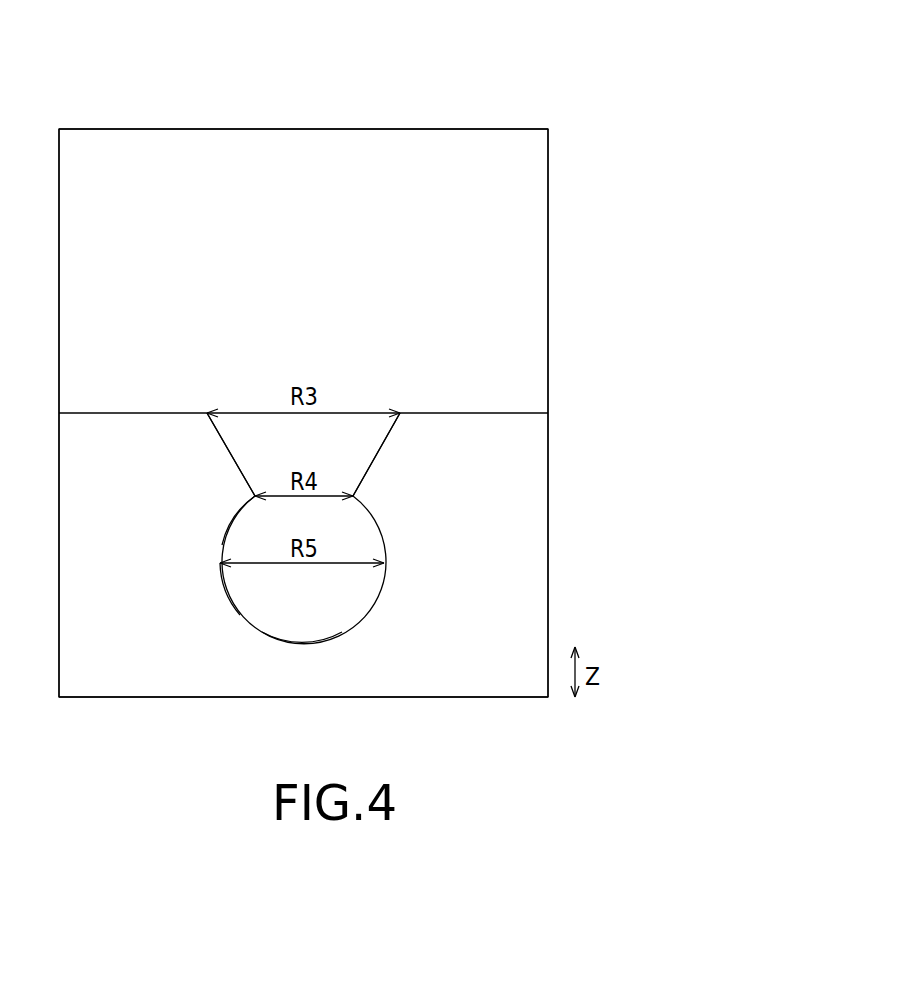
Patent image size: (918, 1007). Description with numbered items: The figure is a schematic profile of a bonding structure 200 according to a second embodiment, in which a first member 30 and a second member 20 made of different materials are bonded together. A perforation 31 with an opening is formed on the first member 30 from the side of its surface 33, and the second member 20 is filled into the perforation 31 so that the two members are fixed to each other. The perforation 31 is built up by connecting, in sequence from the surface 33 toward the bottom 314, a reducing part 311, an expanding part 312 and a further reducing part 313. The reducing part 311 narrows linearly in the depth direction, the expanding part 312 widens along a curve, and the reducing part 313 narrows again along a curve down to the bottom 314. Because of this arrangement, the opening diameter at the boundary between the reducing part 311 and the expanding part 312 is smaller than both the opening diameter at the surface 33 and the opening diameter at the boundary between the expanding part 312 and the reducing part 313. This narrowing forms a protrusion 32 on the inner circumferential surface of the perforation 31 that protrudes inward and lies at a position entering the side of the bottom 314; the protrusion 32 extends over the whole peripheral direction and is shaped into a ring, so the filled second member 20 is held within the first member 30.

The bonding structure 200 is at (445, 97).
The second member 20 is at (520, 306).
The first member 30 is at (518, 520).
The surface 33 is at (476, 413).
The perforation 31 is at (240, 617).
The reducing part 311 is at (232, 455).
The protrusion 32 is at (356, 491).
The expanding part 312 is at (228, 527).
The reducing part 313 is at (225, 585).
The bottom 314 is at (300, 645).